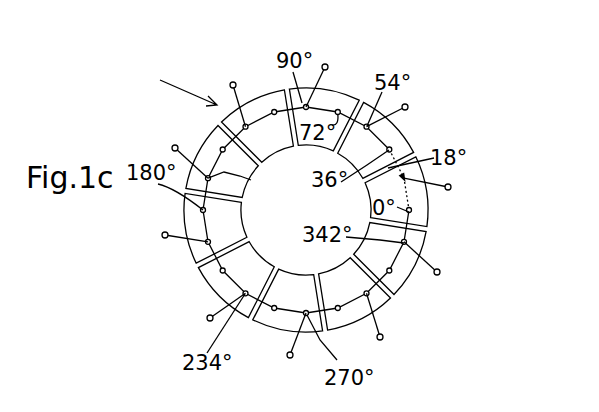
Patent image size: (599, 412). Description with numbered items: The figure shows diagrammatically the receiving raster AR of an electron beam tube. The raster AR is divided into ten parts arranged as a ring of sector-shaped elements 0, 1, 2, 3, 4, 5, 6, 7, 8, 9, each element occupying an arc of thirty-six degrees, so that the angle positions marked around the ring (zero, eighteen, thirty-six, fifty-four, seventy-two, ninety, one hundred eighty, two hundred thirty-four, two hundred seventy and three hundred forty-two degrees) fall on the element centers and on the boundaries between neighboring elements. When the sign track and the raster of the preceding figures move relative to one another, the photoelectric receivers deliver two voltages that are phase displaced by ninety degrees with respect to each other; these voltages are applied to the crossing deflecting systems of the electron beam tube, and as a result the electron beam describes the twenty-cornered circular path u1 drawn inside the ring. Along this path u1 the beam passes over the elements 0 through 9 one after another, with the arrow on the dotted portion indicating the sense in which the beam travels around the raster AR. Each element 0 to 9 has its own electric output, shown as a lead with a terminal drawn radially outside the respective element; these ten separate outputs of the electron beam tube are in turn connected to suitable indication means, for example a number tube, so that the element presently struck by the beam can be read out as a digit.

The receiving raster element 0 is at (421, 192).
The receiving raster element 1 is at (388, 140).
The receiving raster element 2 is at (326, 102).
The receiving raster element 3 is at (258, 110).
The receiving raster element 4 is at (212, 149).
The receiving raster element 5 is at (195, 228).
The receiving raster element 6 is at (221, 280).
The receiving raster element 7 is at (284, 322).
The receiving raster element 8 is at (370, 297).
The receiving raster element 9 is at (415, 259).
The twenty-cornered circular path u1 is at (251, 180).
The receiving raster AR is at (178, 81).